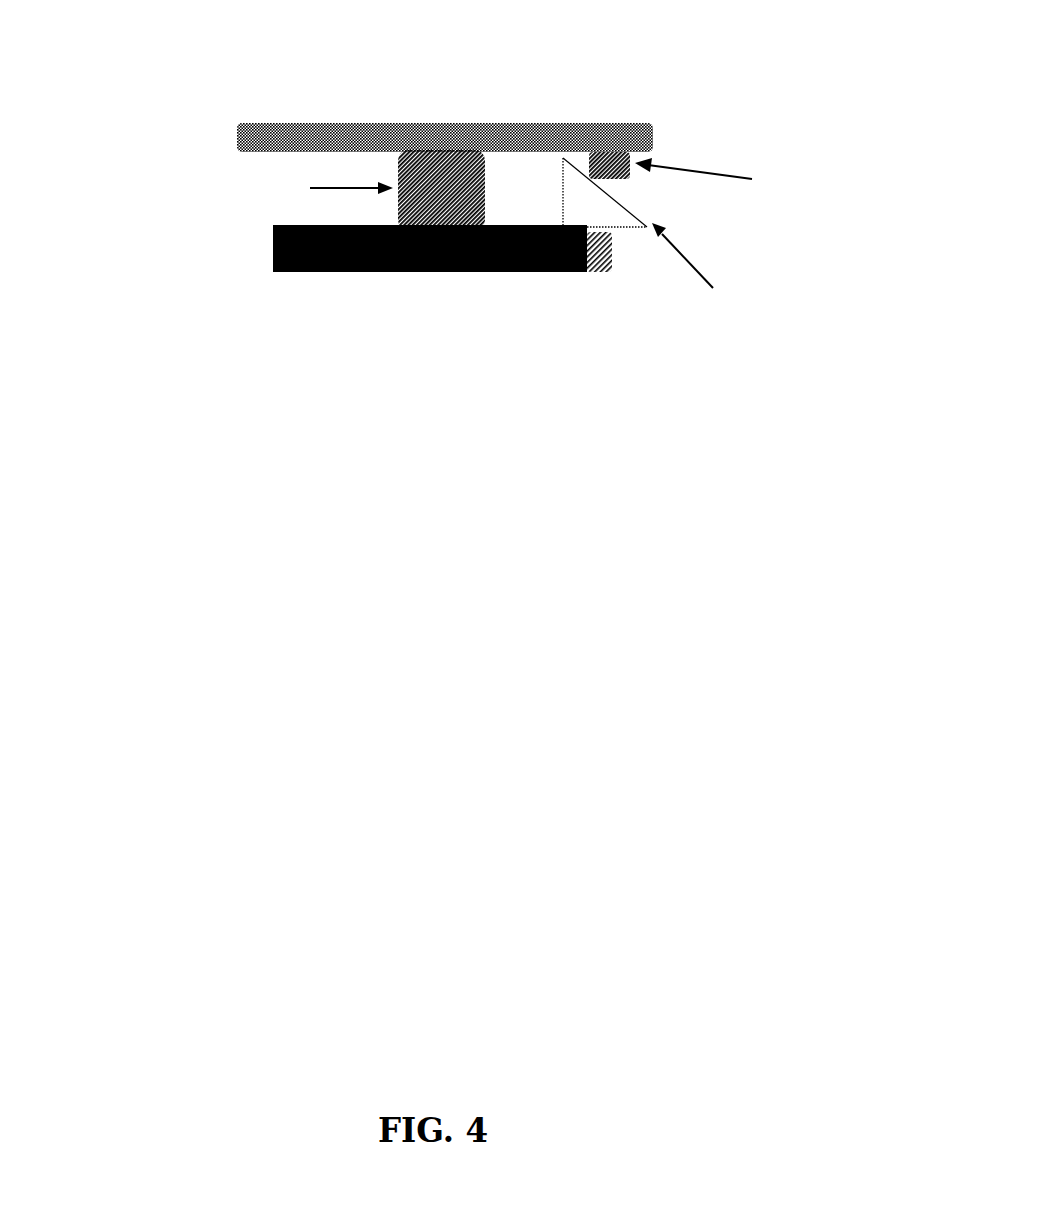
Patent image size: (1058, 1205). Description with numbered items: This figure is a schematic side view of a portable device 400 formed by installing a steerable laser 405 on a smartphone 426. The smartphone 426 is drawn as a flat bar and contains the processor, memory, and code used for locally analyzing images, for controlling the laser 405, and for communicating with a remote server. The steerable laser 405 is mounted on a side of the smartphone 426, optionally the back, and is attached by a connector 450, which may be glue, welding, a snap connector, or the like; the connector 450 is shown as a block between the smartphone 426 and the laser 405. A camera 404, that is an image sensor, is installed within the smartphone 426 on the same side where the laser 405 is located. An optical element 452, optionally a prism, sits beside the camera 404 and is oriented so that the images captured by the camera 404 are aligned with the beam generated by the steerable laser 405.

The portable device 400 is at (387, 462).
The camera 404 is at (764, 192).
The steerable laser 405 is at (338, 272).
The smartphone 426 is at (336, 133).
The connector 450 is at (271, 193).
The optical element 452 is at (741, 236).